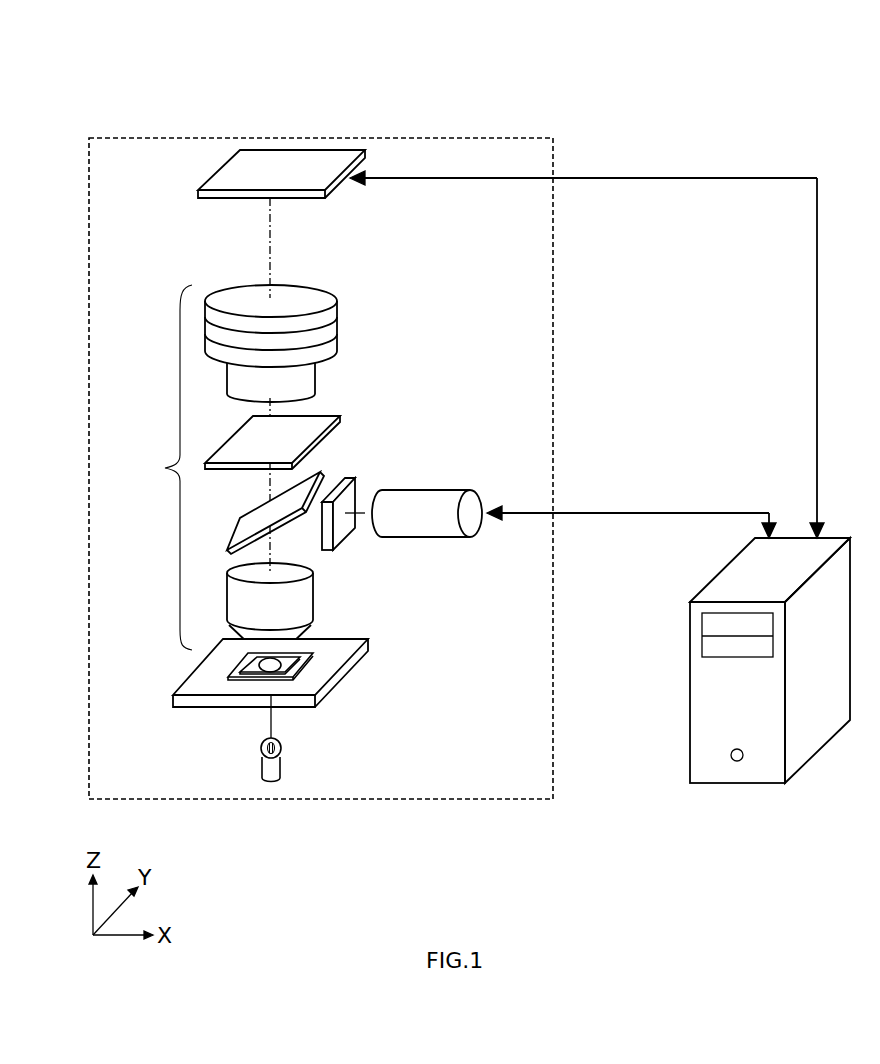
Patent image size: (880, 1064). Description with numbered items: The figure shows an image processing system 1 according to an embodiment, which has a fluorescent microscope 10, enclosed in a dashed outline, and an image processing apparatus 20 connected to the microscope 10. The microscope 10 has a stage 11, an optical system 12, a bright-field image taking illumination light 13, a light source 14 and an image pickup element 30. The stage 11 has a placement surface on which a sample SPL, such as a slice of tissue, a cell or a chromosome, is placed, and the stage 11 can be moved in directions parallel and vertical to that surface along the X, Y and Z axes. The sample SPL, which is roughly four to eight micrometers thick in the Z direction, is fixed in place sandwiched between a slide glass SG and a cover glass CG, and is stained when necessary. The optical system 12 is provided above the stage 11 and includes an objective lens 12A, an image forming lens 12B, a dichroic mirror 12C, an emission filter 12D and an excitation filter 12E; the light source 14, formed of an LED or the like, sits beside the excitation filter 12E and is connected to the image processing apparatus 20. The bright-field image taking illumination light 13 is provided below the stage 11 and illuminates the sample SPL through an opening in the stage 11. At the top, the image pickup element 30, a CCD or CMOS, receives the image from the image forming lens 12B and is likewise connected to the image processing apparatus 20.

The image processing system 1 is at (595, 82).
The microscope 10 is at (260, 800).
The stage 11 is at (307, 688).
The optical system 12 is at (163, 467).
The objective lens 12A is at (313, 600).
The image forming lens 12B is at (345, 326).
The dichroic mirror 12C is at (322, 470).
The emission filter 12D is at (341, 420).
The excitation filter 12E is at (347, 537).
The bright-field image taking illumination light 13 is at (282, 762).
The light source 14 is at (438, 487).
The image processing apparatus 20 is at (706, 783).
The image pickup element 30 is at (318, 150).
The slide glass SG is at (218, 669).
The cover glass CG is at (292, 663).
The sample SPL is at (300, 661).